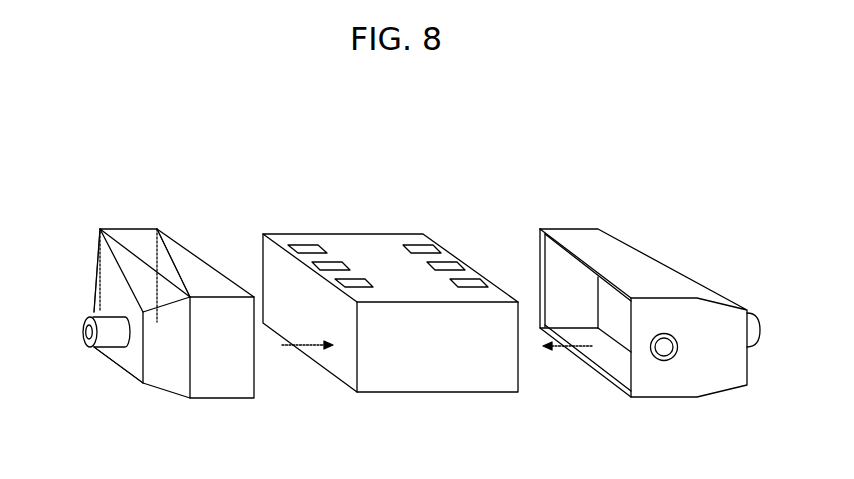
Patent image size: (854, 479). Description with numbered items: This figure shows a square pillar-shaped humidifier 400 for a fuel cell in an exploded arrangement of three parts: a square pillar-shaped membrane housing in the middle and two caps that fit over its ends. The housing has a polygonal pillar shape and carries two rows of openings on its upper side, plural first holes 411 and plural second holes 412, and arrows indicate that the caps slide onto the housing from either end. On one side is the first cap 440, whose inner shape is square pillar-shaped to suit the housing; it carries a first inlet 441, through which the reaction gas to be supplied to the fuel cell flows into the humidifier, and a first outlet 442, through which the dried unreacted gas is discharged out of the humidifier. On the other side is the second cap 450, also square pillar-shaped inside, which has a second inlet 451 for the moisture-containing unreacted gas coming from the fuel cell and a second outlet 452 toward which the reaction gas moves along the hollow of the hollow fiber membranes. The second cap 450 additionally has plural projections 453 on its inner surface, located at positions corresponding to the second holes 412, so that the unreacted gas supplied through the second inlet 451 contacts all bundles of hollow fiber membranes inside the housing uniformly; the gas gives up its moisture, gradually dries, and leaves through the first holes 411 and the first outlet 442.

The square pillar-shaped humidifier 400 is at (604, 149).
The first holes 411 is at (418, 248).
The second holes 412 is at (303, 243).
The first cap 440 is at (582, 238).
The first inlet 441 is at (759, 325).
The first outlet 442 is at (664, 348).
The second cap 450 is at (128, 228).
The second inlet 451 is at (94, 258).
The second outlet 452 is at (88, 333).
The projections 453 is at (149, 247).